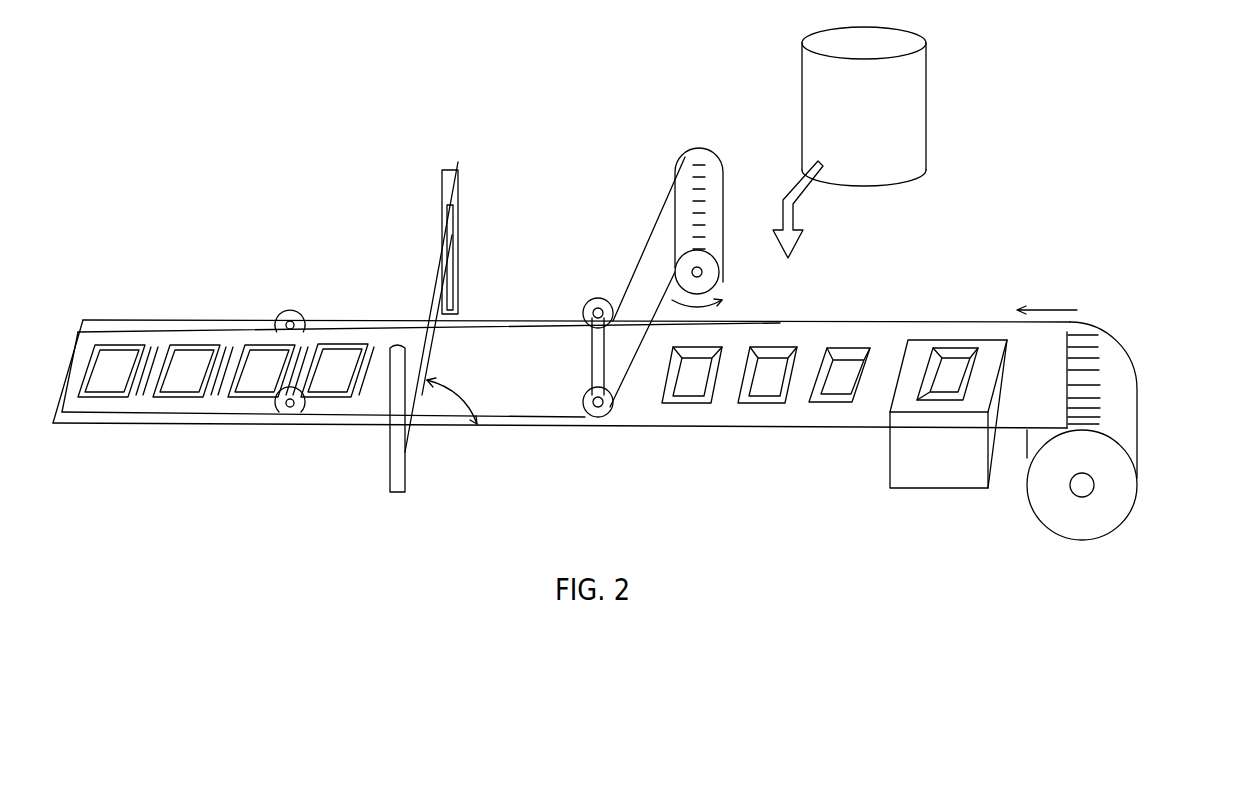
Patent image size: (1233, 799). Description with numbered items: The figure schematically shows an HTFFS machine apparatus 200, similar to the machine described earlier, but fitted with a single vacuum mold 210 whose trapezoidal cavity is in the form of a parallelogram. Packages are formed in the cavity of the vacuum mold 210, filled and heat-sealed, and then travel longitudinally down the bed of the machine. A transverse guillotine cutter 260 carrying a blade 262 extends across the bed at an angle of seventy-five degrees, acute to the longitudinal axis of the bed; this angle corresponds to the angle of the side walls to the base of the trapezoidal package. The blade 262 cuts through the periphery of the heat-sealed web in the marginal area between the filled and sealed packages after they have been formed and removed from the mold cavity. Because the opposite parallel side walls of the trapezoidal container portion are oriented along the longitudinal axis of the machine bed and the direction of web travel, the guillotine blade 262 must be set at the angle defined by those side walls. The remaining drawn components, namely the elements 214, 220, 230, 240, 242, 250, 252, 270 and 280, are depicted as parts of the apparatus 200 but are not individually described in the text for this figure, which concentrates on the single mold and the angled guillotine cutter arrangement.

The apparatus 200 is at (162, 47).
The vacuum mold 210 is at (957, 380).
The frame 214 is at (917, 342).
The carrier 220 is at (828, 348).
The roller 230 is at (1122, 417).
The electrolyte reservoir 240 is at (912, 112).
The dispensing direction 242 is at (793, 207).
The roller 250 is at (700, 148).
The support 252 is at (597, 298).
The transverse guillotine cutter 260 is at (455, 170).
The blade 262 is at (456, 246).
The bearing 270 is at (284, 311).
The conveyor belt 280 is at (172, 333).